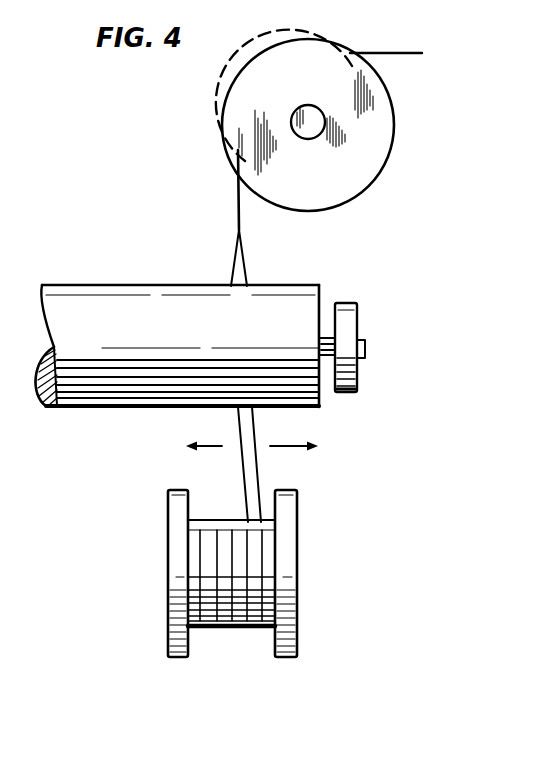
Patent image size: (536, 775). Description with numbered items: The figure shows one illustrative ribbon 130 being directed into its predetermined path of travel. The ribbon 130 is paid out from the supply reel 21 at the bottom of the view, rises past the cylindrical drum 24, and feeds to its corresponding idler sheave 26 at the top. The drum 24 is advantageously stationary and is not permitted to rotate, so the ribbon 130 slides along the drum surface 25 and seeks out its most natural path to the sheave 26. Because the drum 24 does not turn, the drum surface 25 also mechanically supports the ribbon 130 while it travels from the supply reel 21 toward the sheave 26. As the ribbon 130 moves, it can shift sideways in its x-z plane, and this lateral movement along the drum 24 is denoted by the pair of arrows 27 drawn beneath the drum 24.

The idler sheave 26 is at (367, 163).
The cylindrical drum 24 is at (283, 313).
The drum surface 25 is at (98, 392).
The arrows 27 is at (210, 445).
The ribbon 130 is at (250, 481).
The supply reel 21 is at (178, 562).